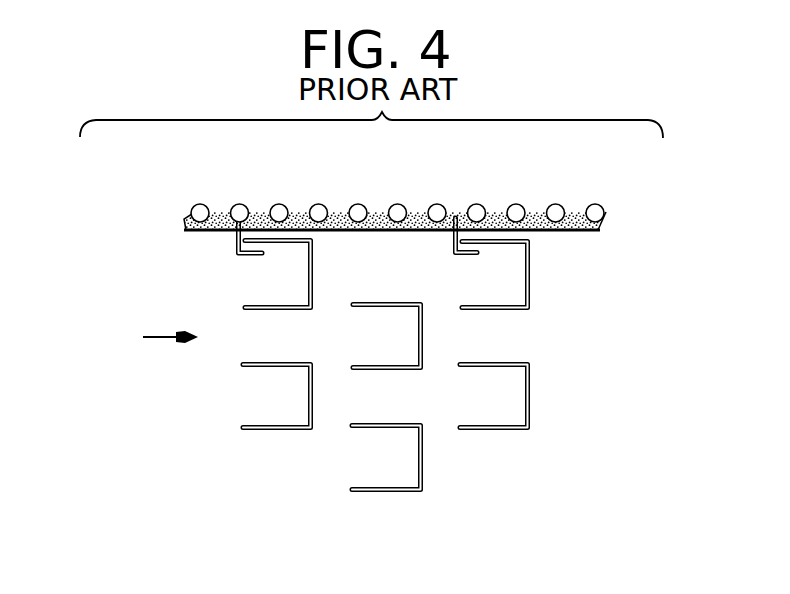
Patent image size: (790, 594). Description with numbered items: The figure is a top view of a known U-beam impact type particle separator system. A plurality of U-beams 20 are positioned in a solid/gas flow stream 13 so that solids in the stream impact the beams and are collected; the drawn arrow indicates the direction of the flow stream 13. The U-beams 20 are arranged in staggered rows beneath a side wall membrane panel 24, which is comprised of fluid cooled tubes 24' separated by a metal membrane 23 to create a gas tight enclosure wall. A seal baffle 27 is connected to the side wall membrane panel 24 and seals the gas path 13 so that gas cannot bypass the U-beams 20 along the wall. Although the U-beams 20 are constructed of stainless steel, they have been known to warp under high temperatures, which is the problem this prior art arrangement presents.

The solid/gas flow stream 13 is at (160, 340).
The U-beams 20 is at (488, 434).
The metal membrane 23 is at (221, 210).
The side wall membrane panel 24 is at (395, 188).
The fluid cooled tubes 24' is at (397, 190).
The seal baffle 27 is at (447, 245).